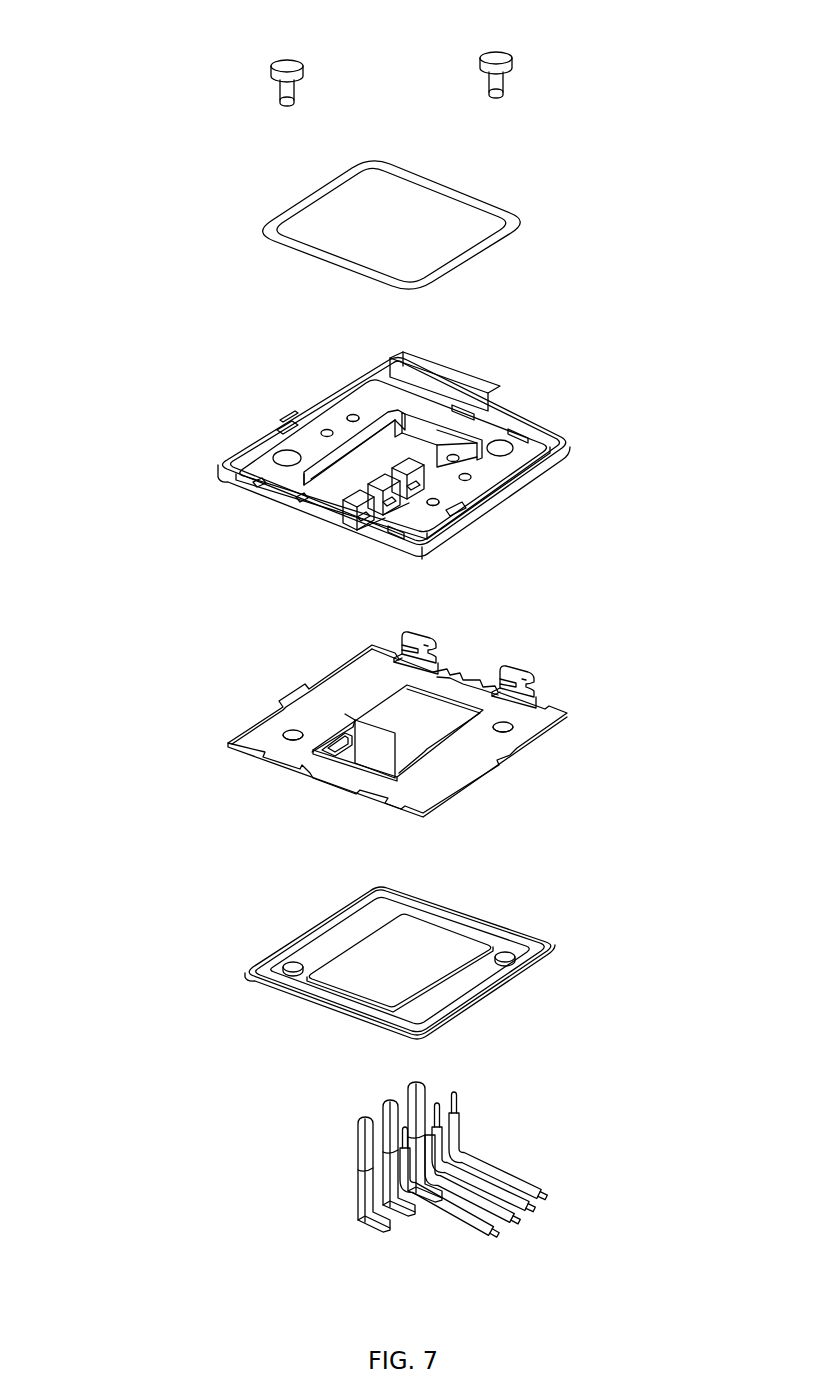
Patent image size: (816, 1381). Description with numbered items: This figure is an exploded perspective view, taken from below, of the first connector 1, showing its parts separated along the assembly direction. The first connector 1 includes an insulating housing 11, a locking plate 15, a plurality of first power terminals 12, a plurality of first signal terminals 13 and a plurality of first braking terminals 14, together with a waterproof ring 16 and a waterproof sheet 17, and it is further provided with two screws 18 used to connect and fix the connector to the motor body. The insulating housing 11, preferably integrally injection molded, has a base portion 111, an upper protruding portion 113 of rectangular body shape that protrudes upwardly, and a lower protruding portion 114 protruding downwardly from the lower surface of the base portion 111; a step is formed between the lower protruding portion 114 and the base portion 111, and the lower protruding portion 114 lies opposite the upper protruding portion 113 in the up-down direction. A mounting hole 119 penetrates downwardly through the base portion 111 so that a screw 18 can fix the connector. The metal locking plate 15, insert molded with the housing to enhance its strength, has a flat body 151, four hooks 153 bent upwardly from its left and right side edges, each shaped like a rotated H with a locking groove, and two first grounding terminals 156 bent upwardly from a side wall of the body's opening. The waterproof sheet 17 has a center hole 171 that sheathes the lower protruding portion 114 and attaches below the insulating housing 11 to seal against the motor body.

The first connector 1 is at (108, 20).
The insulating housing 11 is at (245, 410).
The base portion 111 is at (547, 430).
The upper protruding portion 113 is at (462, 385).
The lower protruding portion 114 is at (465, 462).
The mounting hole 119 is at (286, 462).
The first power terminals 12 is at (342, 1153).
The first signal terminals 13 is at (503, 1158).
The first braking terminals 14 is at (458, 1228).
The locking plate 15 is at (230, 695).
The body 151 is at (510, 747).
The hooks 153 is at (512, 673).
The first grounding terminals 156 is at (378, 748).
The waterproof ring 16 is at (273, 187).
The waterproof sheet 17 is at (257, 936).
The center hole 171 is at (408, 1000).
The screws 18 is at (262, 60).